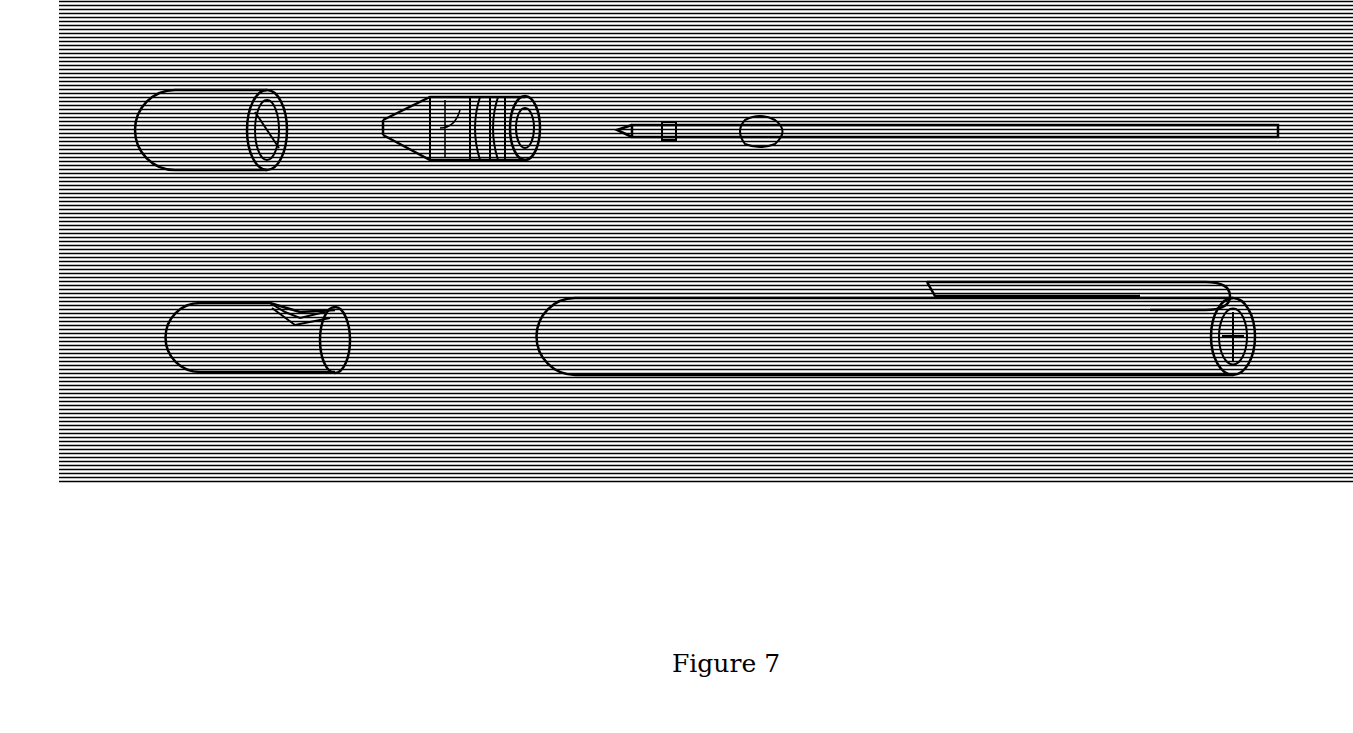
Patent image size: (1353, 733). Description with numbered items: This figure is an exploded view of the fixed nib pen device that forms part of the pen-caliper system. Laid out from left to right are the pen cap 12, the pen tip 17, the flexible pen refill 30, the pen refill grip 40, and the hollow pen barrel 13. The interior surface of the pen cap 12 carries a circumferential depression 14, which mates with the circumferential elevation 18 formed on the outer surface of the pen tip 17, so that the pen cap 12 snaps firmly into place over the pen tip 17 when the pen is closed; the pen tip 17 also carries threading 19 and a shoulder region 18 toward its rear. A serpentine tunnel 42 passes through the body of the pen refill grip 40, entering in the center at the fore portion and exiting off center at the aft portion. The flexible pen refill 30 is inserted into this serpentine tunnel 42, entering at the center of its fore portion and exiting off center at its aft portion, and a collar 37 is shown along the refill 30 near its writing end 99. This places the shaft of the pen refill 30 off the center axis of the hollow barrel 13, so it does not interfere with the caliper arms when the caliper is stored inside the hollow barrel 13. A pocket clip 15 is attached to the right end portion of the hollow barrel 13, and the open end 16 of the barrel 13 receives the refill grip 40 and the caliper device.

The pen cap 12 is at (217, 115).
The hollow pen barrel 13 is at (650, 335).
The circumferential depression 14 is at (288, 133).
The pocket clip 15 is at (1113, 278).
The end opening 16 is at (1248, 338).
The pen tip 17 is at (446, 105).
The circumferential elevation 18 is at (466, 150).
The nozzle threads 19 is at (496, 100).
The flexible pen refill 30 is at (913, 120).
The clamp 37 is at (765, 120).
The pen refill grip 40 is at (240, 300).
The serpentine tunnel 42 is at (286, 308).
The rod tip 99 is at (638, 135).